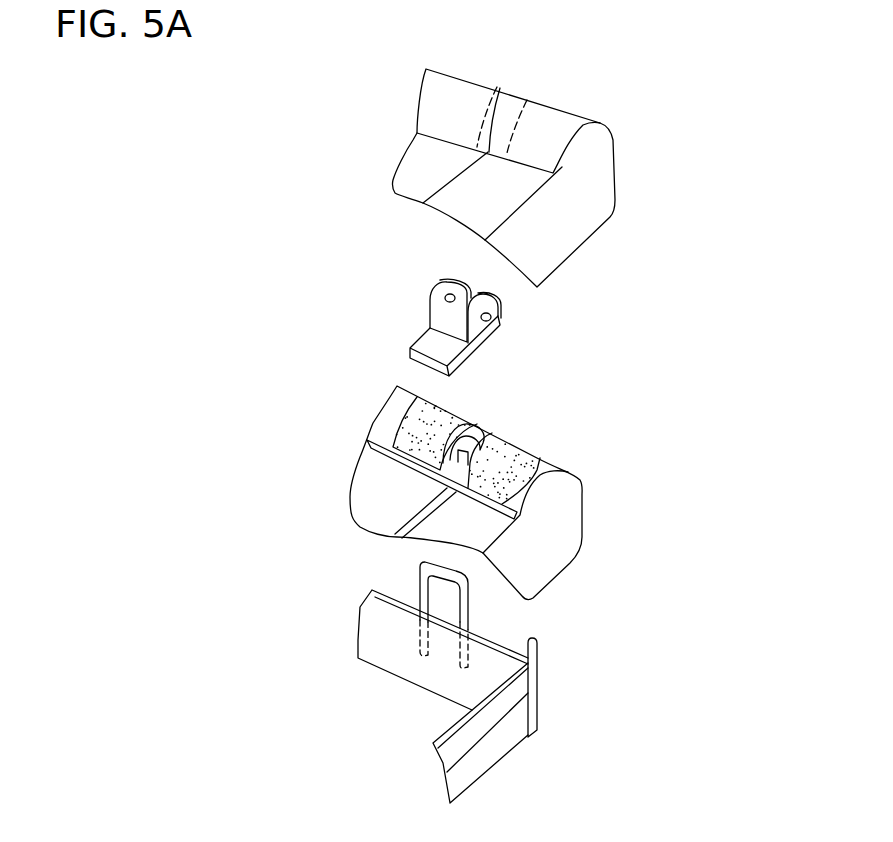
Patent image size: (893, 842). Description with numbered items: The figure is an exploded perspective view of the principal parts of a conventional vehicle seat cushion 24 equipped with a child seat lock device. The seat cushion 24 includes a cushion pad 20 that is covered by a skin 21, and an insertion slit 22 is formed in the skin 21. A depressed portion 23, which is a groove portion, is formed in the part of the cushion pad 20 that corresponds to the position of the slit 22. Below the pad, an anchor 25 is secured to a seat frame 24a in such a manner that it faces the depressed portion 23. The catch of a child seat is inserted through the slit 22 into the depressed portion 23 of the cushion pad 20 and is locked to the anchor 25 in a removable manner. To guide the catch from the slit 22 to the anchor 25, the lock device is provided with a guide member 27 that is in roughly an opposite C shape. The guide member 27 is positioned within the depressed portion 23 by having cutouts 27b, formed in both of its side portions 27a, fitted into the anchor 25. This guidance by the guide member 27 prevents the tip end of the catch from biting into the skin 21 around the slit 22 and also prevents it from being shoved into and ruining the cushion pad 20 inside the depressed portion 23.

The cushion pad 20 is at (505, 447).
The skin 21 is at (610, 168).
The insertion slit 22 is at (497, 112).
The depressed portion 23 is at (483, 424).
The seat cushion 24 is at (345, 473).
The seat frame 24a is at (487, 753).
The anchor 25 is at (420, 590).
The guide member 27 is at (430, 348).
The side portions 27a is at (437, 310).
The cutouts 27b is at (452, 300).